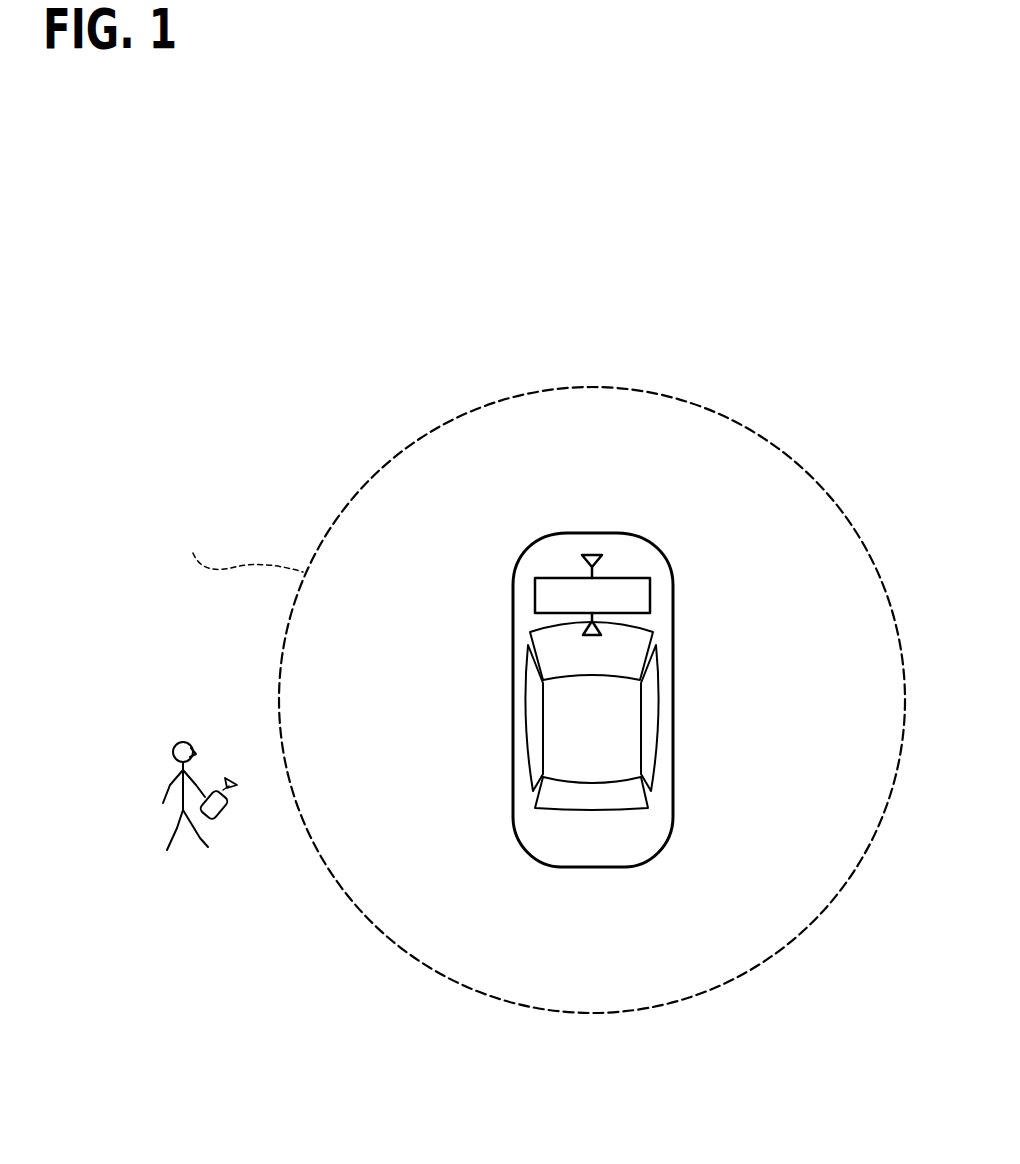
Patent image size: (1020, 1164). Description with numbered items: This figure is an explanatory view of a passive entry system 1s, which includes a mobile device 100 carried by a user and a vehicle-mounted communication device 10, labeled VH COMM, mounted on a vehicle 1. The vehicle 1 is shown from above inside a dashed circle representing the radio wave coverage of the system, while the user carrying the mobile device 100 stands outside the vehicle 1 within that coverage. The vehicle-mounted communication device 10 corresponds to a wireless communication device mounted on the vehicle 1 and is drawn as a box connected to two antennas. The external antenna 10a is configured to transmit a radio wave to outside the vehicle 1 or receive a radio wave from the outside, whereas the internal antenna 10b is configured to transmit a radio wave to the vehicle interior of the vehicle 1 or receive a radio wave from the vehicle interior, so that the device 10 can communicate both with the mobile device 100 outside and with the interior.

The vehicle 1 is at (590, 533).
The passive entry system 1s is at (243, 462).
The vehicle-mounted communication device 10 is at (643, 578).
The external antenna 10a is at (595, 550).
The internal antenna 10b is at (594, 637).
The mobile device 100 is at (207, 790).